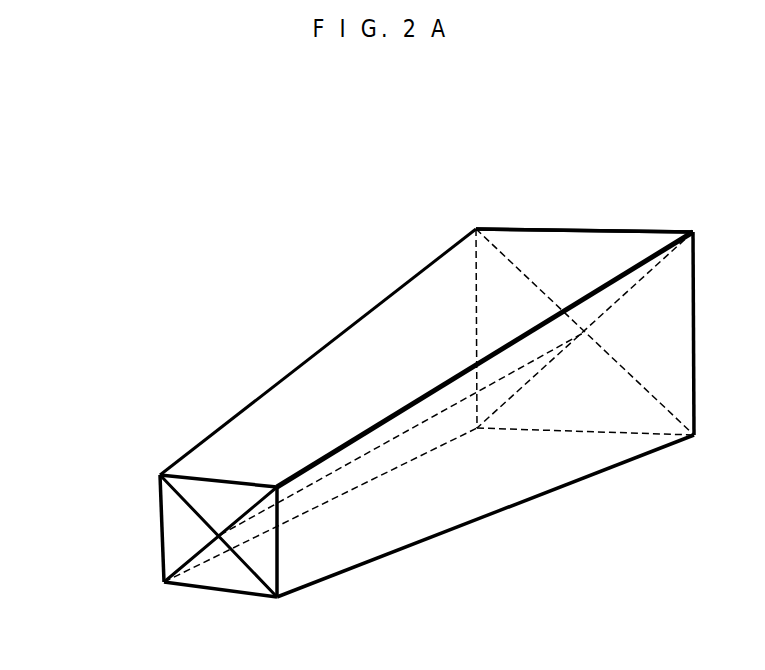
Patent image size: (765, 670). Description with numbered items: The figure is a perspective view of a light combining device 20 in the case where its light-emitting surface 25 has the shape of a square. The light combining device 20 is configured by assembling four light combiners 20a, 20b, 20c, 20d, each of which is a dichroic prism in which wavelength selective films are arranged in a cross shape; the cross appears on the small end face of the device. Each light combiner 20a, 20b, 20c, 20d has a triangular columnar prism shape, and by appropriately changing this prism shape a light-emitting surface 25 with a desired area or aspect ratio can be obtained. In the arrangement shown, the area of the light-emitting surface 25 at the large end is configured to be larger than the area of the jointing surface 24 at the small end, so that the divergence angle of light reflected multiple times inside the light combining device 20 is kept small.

The light combining device 20 is at (427, 356).
The light combiner 20a is at (258, 447).
The jointing surface 24 is at (165, 495).
The light combiner 20b is at (183, 538).
The light combiner 20c is at (227, 575).
The light combiner 20d is at (367, 535).
The light-emitting surface 25 is at (615, 237).